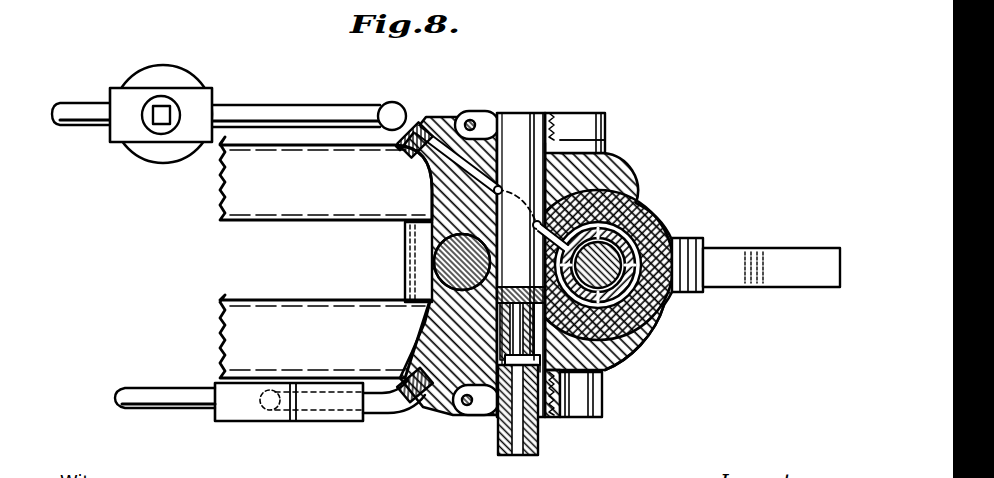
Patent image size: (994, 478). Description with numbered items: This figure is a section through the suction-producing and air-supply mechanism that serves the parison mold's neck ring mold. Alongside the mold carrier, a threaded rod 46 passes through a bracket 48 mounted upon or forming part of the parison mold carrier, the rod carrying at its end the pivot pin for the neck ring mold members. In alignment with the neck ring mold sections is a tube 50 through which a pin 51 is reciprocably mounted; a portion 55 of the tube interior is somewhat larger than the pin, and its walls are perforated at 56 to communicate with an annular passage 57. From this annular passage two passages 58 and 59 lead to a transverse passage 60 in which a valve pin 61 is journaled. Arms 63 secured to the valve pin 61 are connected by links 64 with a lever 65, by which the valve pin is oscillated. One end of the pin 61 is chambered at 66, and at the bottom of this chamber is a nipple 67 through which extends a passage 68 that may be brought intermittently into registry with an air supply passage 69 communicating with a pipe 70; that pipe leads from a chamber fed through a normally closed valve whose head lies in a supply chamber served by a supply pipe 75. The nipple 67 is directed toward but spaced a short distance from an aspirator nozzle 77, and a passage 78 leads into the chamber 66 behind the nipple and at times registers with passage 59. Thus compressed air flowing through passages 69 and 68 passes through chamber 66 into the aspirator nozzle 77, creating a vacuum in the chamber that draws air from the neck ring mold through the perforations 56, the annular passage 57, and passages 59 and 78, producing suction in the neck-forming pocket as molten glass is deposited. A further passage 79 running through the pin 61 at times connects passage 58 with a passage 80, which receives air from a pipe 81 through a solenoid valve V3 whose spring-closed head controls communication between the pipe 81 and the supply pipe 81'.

The valve V3 is at (150, 70).
The threaded rod 46 is at (460, 251).
The bracket 48 is at (315, 255).
The tube 50 is at (660, 235).
The pin 51 is at (641, 303).
The enlarged portion of tube interior 55 is at (622, 207).
The perforations 56 is at (623, 337).
The annular passage 57 is at (668, 290).
The passage 58 is at (560, 140).
The passage 59 is at (606, 376).
The transverse passage 60 is at (547, 365).
The valve pin 61 is at (518, 118).
The arms 63 is at (607, 120).
The links 64 is at (607, 143).
The lever 65 is at (752, 250).
The chamber 66 is at (500, 375).
The nipple 67 is at (543, 380).
The passage 68 is at (493, 332).
The air supply passage 69 is at (443, 363).
The pipe 70 is at (383, 413).
The supply pipe 75 is at (177, 408).
The aspirator nozzle 77 is at (537, 448).
The passage 78 is at (493, 303).
The passage 79 is at (512, 217).
The passage 80 is at (445, 128).
The pipe 81 is at (309, 93).
The supply pipe 81' is at (81, 94).